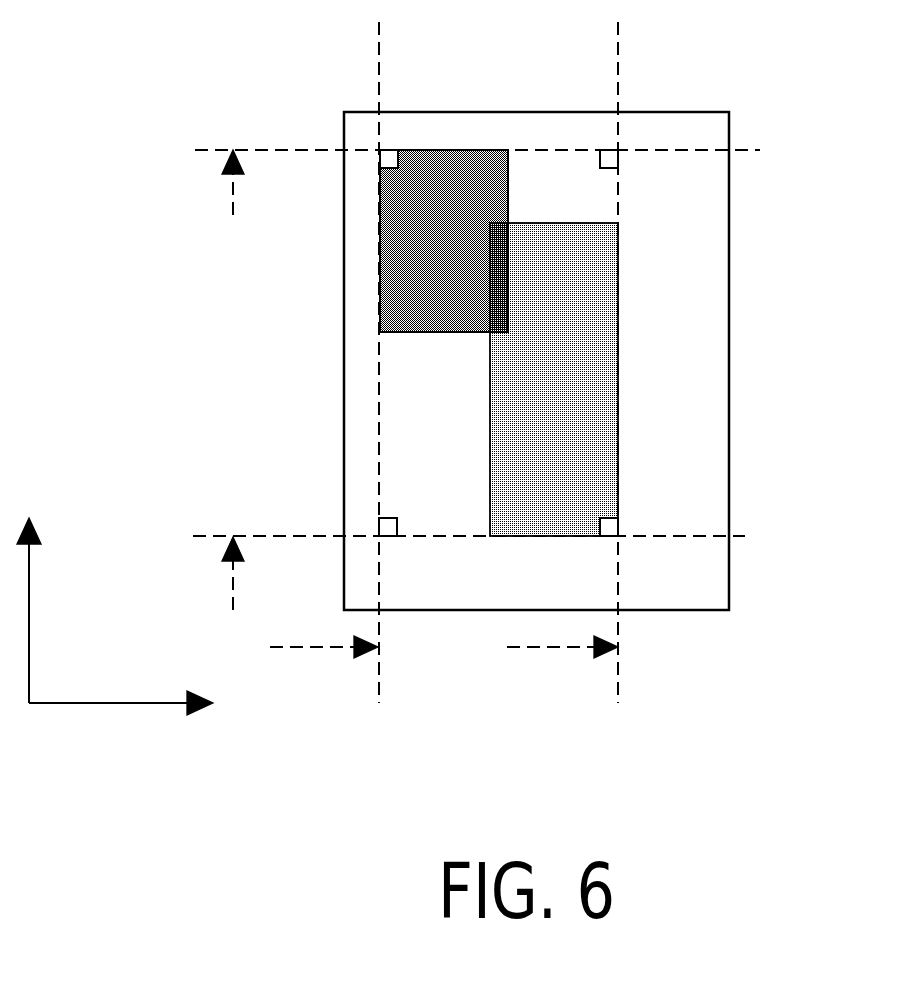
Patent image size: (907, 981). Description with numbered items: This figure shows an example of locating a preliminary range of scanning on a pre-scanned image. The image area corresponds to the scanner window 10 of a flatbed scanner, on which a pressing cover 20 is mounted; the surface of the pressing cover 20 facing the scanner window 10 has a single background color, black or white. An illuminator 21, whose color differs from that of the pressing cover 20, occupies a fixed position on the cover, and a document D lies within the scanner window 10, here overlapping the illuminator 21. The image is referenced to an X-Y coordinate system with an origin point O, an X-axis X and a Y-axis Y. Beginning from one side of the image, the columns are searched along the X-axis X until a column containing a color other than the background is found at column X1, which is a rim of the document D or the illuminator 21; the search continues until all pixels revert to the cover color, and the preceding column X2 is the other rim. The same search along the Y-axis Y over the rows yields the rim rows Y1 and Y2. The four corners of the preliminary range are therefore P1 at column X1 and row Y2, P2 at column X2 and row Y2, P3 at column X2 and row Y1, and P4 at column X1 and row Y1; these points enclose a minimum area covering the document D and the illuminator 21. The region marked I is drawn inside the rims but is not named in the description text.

The scanner window 10 is at (732, 350).
The pressing cover 20 is at (693, 480).
The illuminator 21 is at (503, 462).
The document D is at (447, 242).
The image area I is at (585, 148).
The first corner point P1 is at (380, 148).
The second corner point P2 is at (612, 170).
The third corner point P3 is at (622, 536).
The fourth corner point P4 is at (398, 538).
The first rim column X1 is at (333, 394).
The second rim column X2 is at (572, 394).
The first rim row Y1 is at (435, 563).
The second rim row Y2 is at (443, 172).
The origin point O is at (293, 632).
The X-axis X is at (148, 705).
The Y-axis Y is at (29, 581).